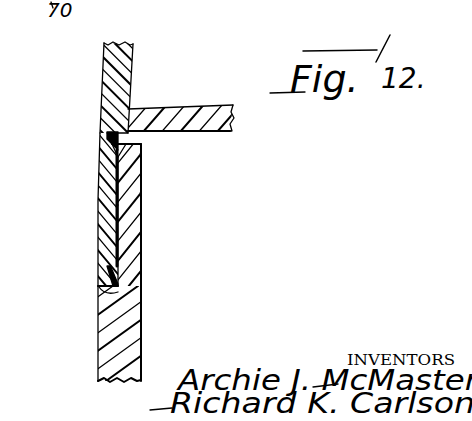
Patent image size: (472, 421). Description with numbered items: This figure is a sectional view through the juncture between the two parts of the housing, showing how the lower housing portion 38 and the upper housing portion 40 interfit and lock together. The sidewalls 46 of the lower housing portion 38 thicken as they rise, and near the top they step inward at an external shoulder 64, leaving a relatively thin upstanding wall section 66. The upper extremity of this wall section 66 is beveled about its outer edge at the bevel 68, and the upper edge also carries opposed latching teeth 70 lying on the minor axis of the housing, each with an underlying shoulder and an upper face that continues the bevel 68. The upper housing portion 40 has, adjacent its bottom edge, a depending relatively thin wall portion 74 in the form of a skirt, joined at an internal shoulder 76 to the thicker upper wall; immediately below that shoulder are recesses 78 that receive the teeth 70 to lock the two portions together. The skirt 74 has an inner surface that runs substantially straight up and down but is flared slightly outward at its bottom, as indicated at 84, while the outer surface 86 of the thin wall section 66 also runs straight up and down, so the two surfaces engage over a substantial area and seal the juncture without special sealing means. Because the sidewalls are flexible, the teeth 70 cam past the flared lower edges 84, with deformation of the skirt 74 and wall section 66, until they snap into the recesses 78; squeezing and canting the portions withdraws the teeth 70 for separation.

The lower housing portion 38 is at (90, 372).
The upper housing portion 40 is at (98, 80).
The sidewalls 46 is at (130, 340).
The external shoulder 64 is at (104, 288).
The thin wall section 66 is at (138, 207).
The bevel 68 is at (138, 153).
The latching teeth 70 is at (117, 177).
The thin wall portion 74 is at (110, 222).
The internal shoulder 76 is at (100, 118).
The recesses 78 is at (108, 147).
The outwardly flared lower edge 84 is at (119, 278).
The outer surface 86 is at (119, 250).